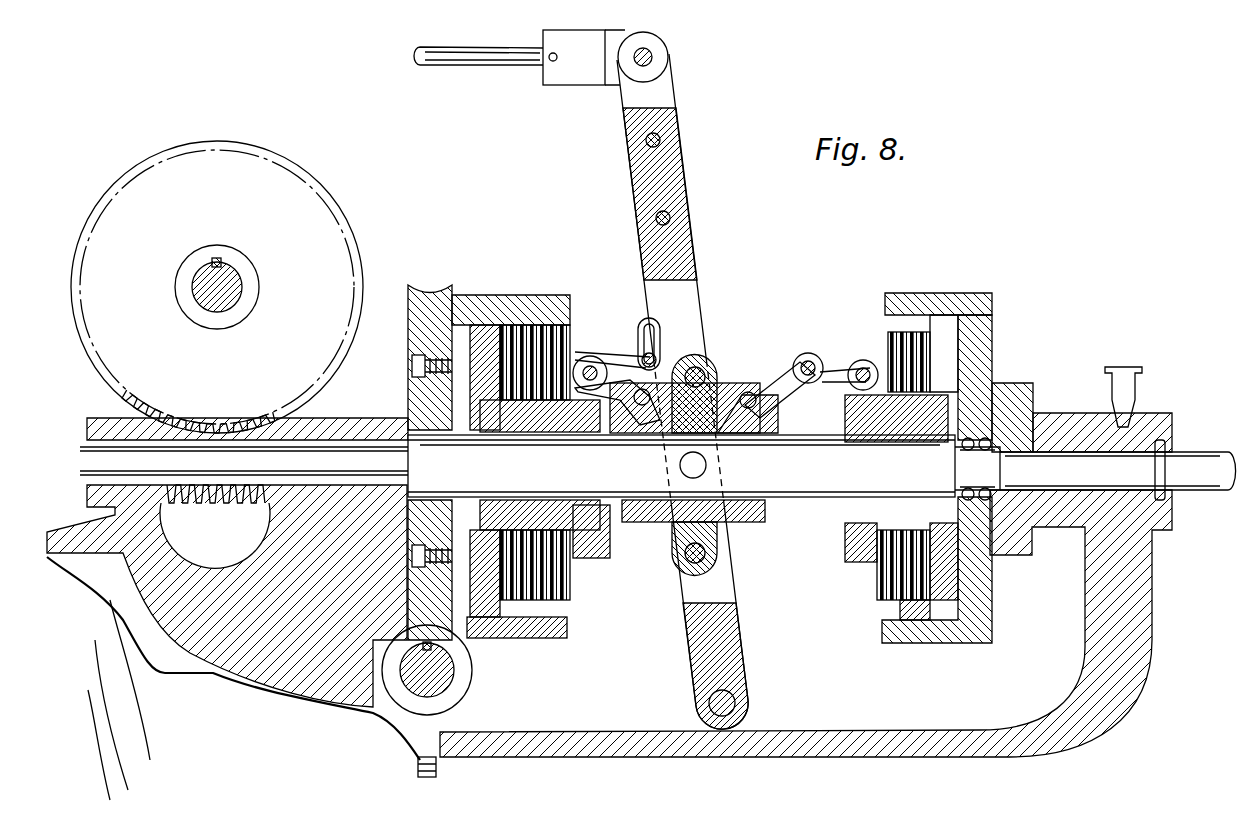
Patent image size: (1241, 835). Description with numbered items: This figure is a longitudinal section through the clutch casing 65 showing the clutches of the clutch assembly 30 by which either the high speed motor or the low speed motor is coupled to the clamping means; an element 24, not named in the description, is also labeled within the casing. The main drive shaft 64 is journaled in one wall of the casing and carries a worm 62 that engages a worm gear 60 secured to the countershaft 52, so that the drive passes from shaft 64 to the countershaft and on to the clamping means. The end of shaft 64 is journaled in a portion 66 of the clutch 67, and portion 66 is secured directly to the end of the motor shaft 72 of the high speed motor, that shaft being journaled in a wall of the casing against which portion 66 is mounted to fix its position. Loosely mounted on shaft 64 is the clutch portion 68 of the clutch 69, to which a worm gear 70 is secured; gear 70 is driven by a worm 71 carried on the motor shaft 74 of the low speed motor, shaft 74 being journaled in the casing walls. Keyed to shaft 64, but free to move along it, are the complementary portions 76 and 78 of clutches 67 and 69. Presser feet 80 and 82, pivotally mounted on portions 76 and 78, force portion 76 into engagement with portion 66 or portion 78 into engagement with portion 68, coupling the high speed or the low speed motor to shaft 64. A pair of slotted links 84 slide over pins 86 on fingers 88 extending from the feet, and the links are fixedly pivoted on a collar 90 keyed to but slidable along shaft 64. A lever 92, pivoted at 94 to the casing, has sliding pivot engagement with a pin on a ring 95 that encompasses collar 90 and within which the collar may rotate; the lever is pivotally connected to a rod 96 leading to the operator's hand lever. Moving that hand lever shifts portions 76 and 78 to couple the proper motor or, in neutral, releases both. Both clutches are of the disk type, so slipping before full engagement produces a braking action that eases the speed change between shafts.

The clutch mechanism 24 is at (760, 366).
The clutch assembly 30 is at (836, 558).
The countershaft 52 is at (238, 275).
The worm gear 60 is at (338, 222).
The worm 62 is at (232, 503).
The main drive shaft 64 is at (704, 467).
The clutch casing 65 is at (312, 690).
The portion of the clutch 66 is at (993, 336).
The clutch 67 is at (858, 568).
The clutch portion 68 is at (545, 640).
The clutch 69 is at (575, 582).
The worm gear 70 is at (452, 290).
The worm 71 is at (456, 686).
The motor shaft 72 is at (1196, 456).
The motor shaft 74 is at (432, 700).
The complementary portion 76 is at (843, 533).
The complementary portion 78 is at (612, 560).
The presser foot 80 is at (866, 358).
The presser foot 82 is at (578, 352).
The slotted links 84 is at (650, 328).
The pins 86 is at (658, 352).
The fingers 88 is at (612, 358).
The collar 90 is at (720, 392).
The lever 92 is at (682, 185).
The pivot 94 is at (736, 704).
The ring 95 is at (710, 372).
The rod 96 is at (462, 68).